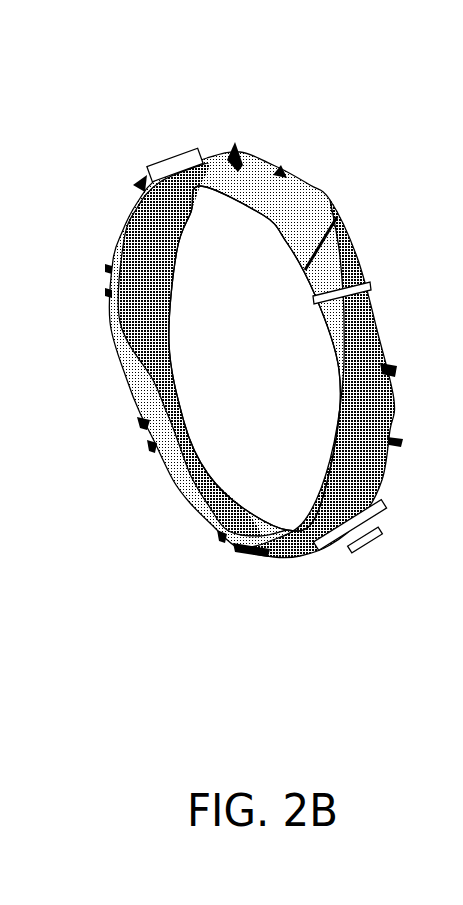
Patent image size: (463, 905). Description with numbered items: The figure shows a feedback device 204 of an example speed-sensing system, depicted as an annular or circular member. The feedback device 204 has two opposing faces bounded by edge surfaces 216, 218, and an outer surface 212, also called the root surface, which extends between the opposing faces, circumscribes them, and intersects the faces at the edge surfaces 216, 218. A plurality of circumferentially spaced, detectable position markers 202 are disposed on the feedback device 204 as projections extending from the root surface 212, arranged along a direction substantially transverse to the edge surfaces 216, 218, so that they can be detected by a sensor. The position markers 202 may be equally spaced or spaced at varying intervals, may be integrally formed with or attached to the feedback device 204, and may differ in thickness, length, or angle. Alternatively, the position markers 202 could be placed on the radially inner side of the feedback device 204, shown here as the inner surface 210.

The position markers 202 is at (332, 305).
The feedback device 204 is at (124, 138).
The inner surface 210 is at (213, 487).
The outer surface 212 is at (294, 204).
The edge surface 216 is at (277, 228).
The edge surface 218 is at (353, 253).